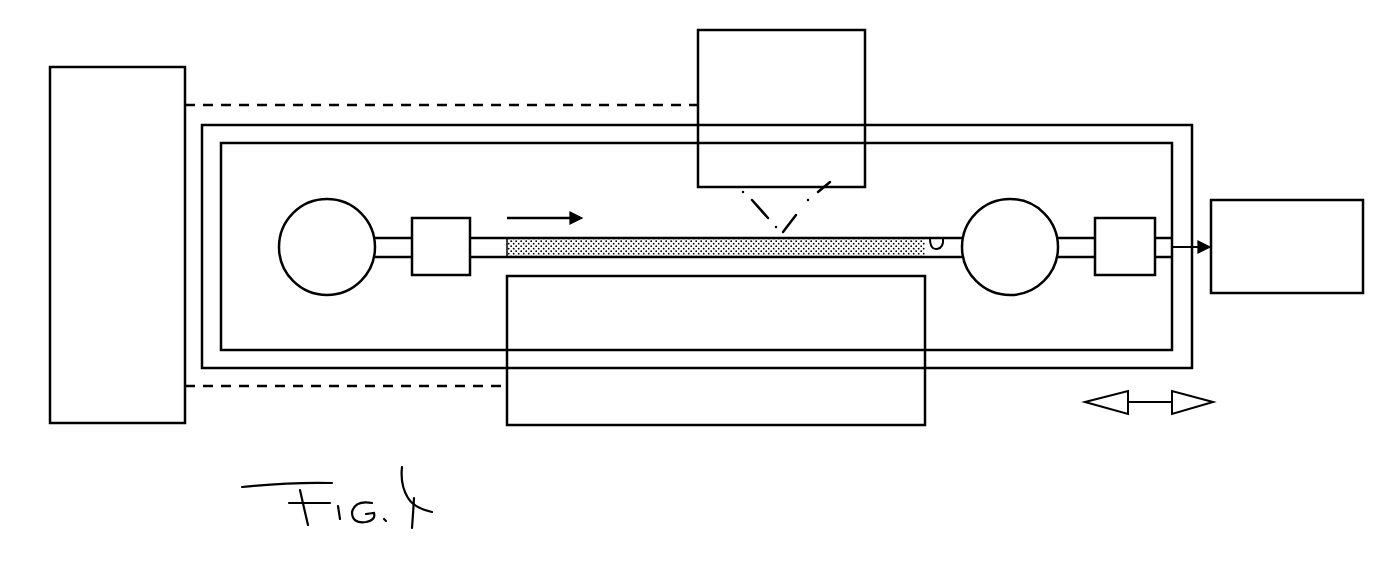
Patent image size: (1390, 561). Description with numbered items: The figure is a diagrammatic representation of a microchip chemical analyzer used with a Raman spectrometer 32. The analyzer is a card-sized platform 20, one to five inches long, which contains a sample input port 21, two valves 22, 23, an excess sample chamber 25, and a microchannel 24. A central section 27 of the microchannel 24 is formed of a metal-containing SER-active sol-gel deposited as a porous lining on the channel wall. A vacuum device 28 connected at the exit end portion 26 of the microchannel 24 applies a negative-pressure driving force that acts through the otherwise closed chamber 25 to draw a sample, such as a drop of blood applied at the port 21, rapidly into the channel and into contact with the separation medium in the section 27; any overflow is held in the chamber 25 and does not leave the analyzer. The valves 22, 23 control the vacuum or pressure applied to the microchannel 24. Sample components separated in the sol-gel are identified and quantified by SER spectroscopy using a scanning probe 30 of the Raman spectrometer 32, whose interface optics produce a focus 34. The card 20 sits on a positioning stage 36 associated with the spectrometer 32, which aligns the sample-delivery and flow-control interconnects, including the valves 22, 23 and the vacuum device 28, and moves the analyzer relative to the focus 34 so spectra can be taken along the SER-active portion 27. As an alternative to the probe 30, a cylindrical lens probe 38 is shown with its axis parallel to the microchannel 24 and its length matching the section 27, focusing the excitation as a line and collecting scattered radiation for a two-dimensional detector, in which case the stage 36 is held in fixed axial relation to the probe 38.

The card-sized platform 20 is at (1118, 142).
The sample input port 21 is at (298, 204).
The valve 22 is at (430, 230).
The valve 23 is at (1097, 280).
The microchannel 24 is at (933, 238).
The excess sample chamber 25 is at (1014, 200).
The exit end portion 26 is at (1166, 258).
The central section 27 is at (612, 236).
The vacuum device 28 is at (1318, 293).
The scanning probe 30 is at (846, 48).
The Raman spectrometer 32 is at (163, 80).
The Raman focus 34 is at (774, 233).
The positioning stage 36 is at (1045, 125).
The cylindrical lens probe 38 is at (913, 383).